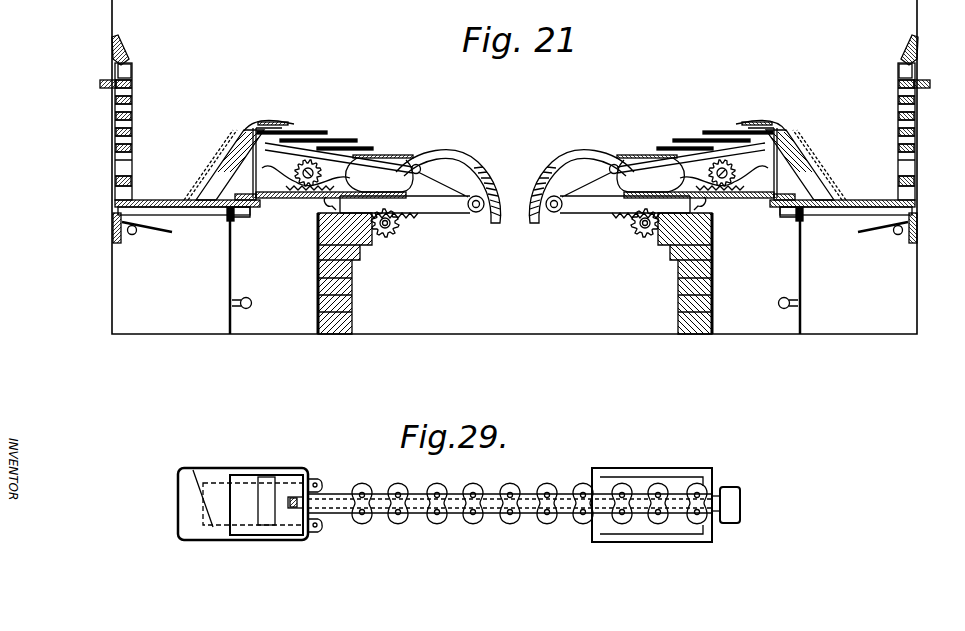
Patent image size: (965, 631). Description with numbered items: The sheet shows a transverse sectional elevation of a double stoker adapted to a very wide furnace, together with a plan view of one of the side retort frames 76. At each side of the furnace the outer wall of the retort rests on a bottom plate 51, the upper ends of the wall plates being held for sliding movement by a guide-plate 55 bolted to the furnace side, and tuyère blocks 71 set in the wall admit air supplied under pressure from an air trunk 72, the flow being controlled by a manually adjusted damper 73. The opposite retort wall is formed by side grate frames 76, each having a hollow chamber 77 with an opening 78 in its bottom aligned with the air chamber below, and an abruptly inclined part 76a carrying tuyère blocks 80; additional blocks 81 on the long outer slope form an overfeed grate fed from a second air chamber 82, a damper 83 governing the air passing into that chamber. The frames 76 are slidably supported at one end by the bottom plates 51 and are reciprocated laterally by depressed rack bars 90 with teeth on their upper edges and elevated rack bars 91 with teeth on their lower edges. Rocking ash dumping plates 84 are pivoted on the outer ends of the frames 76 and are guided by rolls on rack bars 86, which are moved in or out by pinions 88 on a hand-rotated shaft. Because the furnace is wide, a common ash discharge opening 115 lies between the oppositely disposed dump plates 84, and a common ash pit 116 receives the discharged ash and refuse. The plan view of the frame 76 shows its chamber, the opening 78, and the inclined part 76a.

In FIG. 21, the bottom plate 51 is at (147, 200).
In FIG. 21, the guide-plate 55 is at (124, 46).
In FIG. 21, the tuyère block 71 is at (133, 113).
In FIG. 21, the air trunk 72 is at (515, 260).
In FIG. 21, the damper 73 is at (160, 229).
In FIG. 21, the side grate frame 76 is at (515, 96).
In FIG. 29, the side grate frame 76 is at (273, 540).
In FIG. 21, the inclined part of frame 76a is at (835, 150).
In FIG. 29, the inclined part of frame 76a is at (212, 537).
In FIG. 21, the hollow chamber 77 is at (509, 188).
In FIG. 21, the opening 78 is at (224, 10).
In FIG. 29, the opening 78 is at (268, 494).
In FIG. 21, the tuyère block 80 is at (222, 141).
In FIG. 21, the overfeed grate block 81 is at (668, 136).
In FIG. 21, the second air chamber 82 is at (515, 270).
In FIG. 21, the damper 83 is at (228, 295).
In FIG. 21, the ash dumping plate 84 is at (483, 172).
In FIG. 21, the rack bar 86 is at (452, 205).
In FIG. 21, the pinion 88 is at (388, 237).
In FIG. 21, the depressed rack bar 90 is at (292, 192).
In FIG. 21, the elevated rack bar 91 is at (298, 171).
In FIG. 21, the common ash discharge opening 115 is at (513, 203).
In FIG. 21, the common ash pit 116 is at (515, 273).